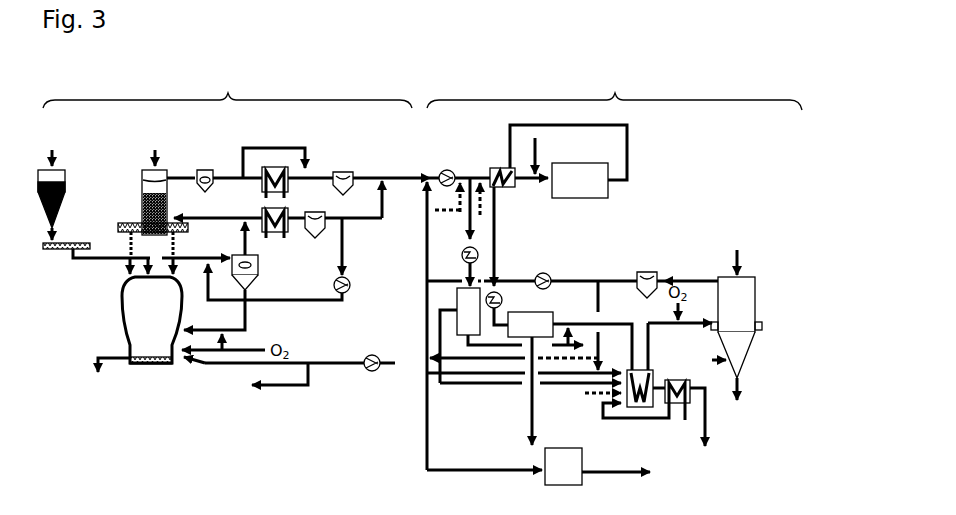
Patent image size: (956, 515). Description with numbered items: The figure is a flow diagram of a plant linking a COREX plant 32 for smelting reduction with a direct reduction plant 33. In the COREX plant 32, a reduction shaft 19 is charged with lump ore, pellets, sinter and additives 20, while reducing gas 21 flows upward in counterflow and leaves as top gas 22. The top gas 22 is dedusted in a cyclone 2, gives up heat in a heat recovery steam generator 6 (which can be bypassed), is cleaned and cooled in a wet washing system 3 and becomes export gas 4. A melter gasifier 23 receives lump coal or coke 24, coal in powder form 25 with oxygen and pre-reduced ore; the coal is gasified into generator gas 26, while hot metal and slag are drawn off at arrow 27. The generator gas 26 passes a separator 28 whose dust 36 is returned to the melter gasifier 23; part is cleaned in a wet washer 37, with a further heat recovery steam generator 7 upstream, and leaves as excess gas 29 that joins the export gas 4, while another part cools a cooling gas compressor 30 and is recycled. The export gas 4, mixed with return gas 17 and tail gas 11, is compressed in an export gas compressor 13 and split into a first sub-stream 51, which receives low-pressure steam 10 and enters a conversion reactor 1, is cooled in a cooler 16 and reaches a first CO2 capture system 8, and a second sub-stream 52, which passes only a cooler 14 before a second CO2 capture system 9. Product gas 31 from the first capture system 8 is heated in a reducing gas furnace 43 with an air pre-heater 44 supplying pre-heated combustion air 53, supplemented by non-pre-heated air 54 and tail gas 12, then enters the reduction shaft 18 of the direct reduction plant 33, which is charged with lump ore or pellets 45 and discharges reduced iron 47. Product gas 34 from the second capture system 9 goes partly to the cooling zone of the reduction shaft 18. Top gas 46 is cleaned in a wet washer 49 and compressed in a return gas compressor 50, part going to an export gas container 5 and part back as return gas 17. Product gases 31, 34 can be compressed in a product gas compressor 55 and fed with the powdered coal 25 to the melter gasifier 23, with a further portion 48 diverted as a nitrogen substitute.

The conversion reactor 1 is at (561, 180).
The dust separator or cyclone 2 is at (207, 169).
The wet washing system 3 is at (343, 171).
The export gas 4 is at (383, 176).
The export gas container 5 is at (597, 466).
The heat recovery steam generator 6 is at (278, 165).
The further heat recovery steam generator 7 is at (275, 232).
The first CO2 capture system 8 is at (570, 342).
The second CO2 capture system 9 is at (481, 335).
The low-pressure steam 10 is at (568, 150).
The tail gas 11 is at (528, 425).
The tail gas 12 is at (470, 385).
The export gas compressor 13 is at (447, 170).
The cooler 14 is at (462, 258).
The cooler 16 is at (499, 291).
The return gas 17 is at (426, 247).
The reduction shaft 18 is at (742, 300).
The reduction shaft 19 is at (140, 205).
The lump ore, pellets, sinter and additives 20 is at (154, 181).
The reducing gas 21 is at (222, 216).
The top gas 22 is at (172, 176).
The melter gasifier 23 is at (152, 320).
The lump coal or coke 24 is at (94, 207).
The coal in powder form 25 is at (198, 377).
The generator gas 26 is at (196, 257).
The hot metal and slag discharge 27 is at (109, 379).
The separator 28 is at (259, 275).
The excess gas 29 is at (368, 221).
The cooling gas compressor 30 is at (351, 286).
The product gas 31 is at (318, 368).
The COREX plant 32 is at (227, 90).
The direct reduction plant 33 is at (614, 91).
The product gas 34 is at (500, 347).
The dust 36 is at (247, 316).
The wet washer 37 is at (316, 232).
The reducing gas furnace 43 is at (638, 403).
The air pre-heater 44 is at (681, 405).
The lump ore and/or pellets 45 is at (736, 253).
The top gas 46 is at (683, 279).
The reduced iron product 47 is at (736, 402).
The further portion of product gases 48 is at (280, 392).
The wet washer 49 is at (648, 271).
The return gas compressor 50 is at (546, 272).
The first sub-stream 51 is at (500, 233).
The second sub-stream 52 is at (465, 222).
The pre-heated combustion air 53 is at (603, 415).
The non-pre-heated air 54 is at (594, 394).
The product gas compressor 55 is at (372, 372).